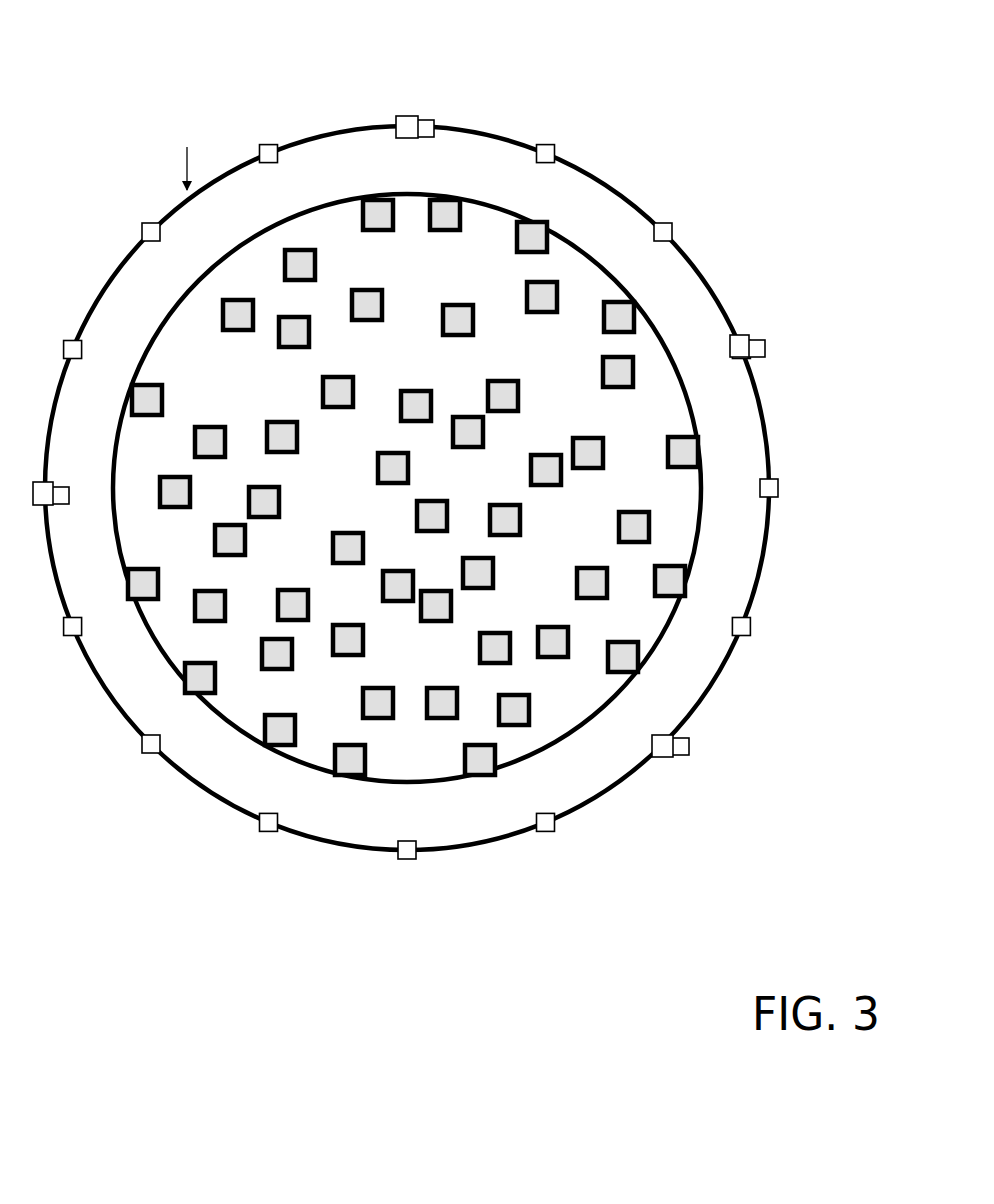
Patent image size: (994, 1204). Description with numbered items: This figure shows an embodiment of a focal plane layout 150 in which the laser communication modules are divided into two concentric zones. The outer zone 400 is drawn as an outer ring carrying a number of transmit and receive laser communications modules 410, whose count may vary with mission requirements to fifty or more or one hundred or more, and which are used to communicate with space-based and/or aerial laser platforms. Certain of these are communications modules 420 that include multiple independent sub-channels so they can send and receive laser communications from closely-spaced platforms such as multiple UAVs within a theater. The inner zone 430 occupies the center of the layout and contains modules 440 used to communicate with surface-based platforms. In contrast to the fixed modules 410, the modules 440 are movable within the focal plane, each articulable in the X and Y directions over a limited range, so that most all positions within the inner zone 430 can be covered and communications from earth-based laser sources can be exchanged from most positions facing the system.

The multi-channel optical communication field of view display 150 is at (597, 62).
The outer zone 400 is at (594, 203).
The transmit and receive laser communications modules 410 is at (664, 218).
The communications modules 420 is at (401, 116).
The inner zone 430 is at (392, 762).
The modules 440 is at (200, 688).